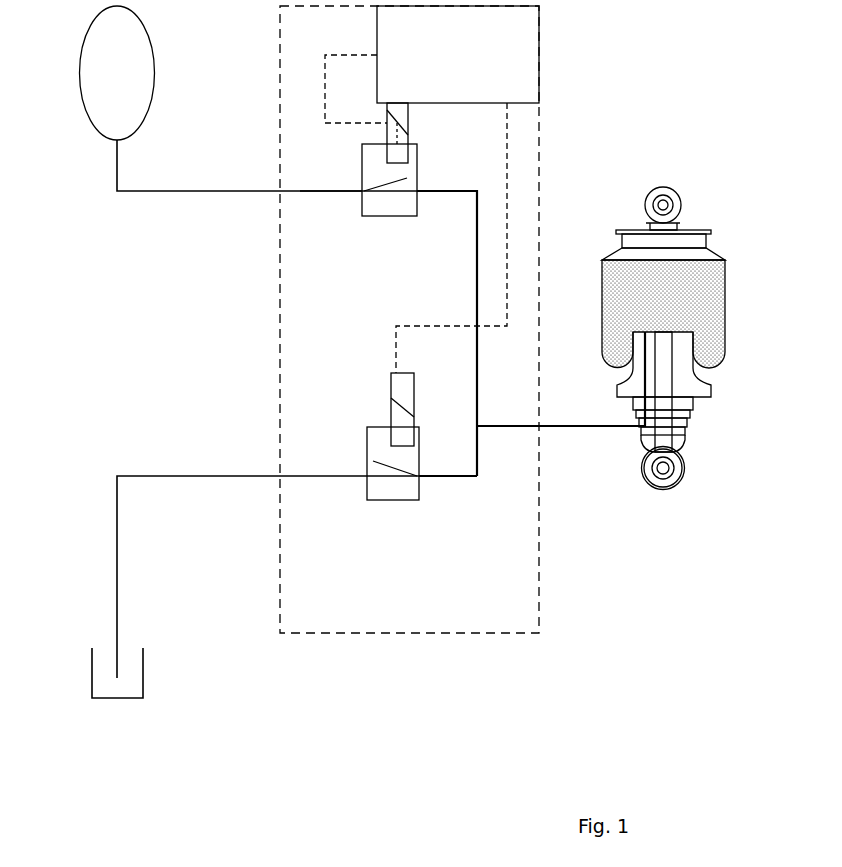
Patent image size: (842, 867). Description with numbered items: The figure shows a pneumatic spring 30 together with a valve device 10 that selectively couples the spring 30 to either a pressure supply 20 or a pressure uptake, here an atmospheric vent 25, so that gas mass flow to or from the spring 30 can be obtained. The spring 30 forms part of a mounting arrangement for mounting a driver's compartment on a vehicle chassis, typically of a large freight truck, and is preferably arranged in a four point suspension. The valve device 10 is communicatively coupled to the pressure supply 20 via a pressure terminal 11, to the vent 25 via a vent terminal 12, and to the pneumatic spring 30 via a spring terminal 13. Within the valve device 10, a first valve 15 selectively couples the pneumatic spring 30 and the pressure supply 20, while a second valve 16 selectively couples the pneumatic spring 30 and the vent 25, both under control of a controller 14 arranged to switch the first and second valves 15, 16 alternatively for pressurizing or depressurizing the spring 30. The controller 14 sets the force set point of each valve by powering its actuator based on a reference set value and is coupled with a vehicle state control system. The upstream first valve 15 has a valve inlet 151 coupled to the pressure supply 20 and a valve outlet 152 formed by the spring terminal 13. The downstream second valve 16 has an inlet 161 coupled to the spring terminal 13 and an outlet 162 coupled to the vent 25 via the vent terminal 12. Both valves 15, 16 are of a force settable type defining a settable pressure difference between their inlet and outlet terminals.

The valve device 10 is at (392, 636).
The pressure terminal 11 is at (237, 194).
The vent terminal 12 is at (237, 480).
The spring terminal 13 is at (580, 429).
The controller 14 is at (468, 57).
The first valve 15 is at (362, 160).
The valve inlet 151 is at (330, 194).
The valve outlet 152 is at (446, 194).
The second valve 16 is at (392, 502).
The inlet 161 is at (506, 429).
The outlet 162 is at (330, 480).
The pressure supply 20 is at (130, 86).
The atmospheric vent 25 is at (117, 620).
The pneumatic spring 30 is at (726, 288).